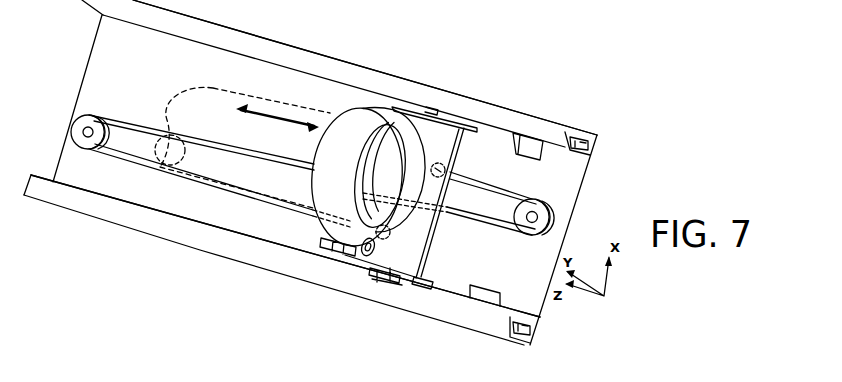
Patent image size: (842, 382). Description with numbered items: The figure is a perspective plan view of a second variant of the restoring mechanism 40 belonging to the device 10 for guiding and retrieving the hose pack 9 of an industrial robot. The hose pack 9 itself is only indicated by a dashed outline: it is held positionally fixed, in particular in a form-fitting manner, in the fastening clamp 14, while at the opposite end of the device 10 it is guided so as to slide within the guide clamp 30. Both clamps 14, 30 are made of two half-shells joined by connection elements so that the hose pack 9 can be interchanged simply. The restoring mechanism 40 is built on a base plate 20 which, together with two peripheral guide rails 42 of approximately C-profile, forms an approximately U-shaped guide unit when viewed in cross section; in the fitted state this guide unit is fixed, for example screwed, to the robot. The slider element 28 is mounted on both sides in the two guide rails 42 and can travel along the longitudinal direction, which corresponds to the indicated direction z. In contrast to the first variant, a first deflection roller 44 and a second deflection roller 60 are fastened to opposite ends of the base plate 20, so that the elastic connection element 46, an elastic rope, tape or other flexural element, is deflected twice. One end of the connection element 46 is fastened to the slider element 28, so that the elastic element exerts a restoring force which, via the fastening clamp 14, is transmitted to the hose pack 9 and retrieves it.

The hose pack 9 is at (218, 88).
The device 10 is at (428, 57).
The fastening clamp 14 is at (327, 163).
The base plate 20 is at (577, 203).
The slider element 28 is at (450, 148).
The guide clamp 30 is at (137, 175).
The restoring mechanism 40 is at (645, 85).
The guide rail 42 is at (585, 132).
The first deflection roller 44 is at (530, 232).
The elastic connection element 46 is at (186, 180).
The second deflection roller 60 is at (96, 118).